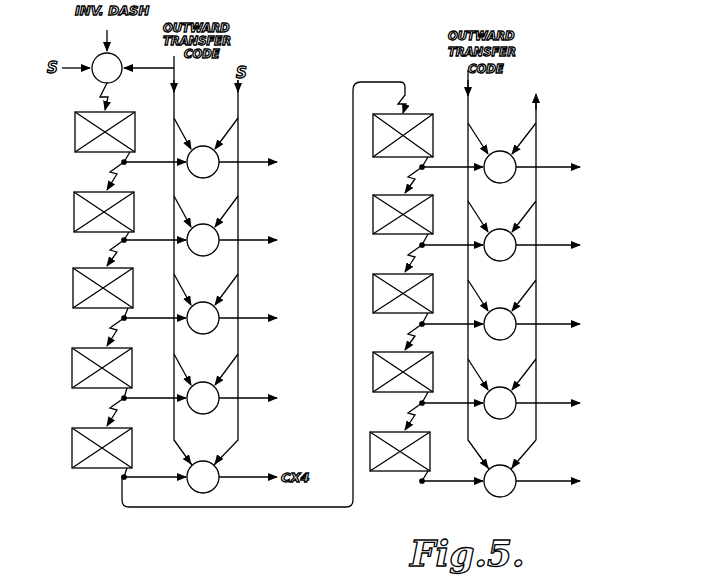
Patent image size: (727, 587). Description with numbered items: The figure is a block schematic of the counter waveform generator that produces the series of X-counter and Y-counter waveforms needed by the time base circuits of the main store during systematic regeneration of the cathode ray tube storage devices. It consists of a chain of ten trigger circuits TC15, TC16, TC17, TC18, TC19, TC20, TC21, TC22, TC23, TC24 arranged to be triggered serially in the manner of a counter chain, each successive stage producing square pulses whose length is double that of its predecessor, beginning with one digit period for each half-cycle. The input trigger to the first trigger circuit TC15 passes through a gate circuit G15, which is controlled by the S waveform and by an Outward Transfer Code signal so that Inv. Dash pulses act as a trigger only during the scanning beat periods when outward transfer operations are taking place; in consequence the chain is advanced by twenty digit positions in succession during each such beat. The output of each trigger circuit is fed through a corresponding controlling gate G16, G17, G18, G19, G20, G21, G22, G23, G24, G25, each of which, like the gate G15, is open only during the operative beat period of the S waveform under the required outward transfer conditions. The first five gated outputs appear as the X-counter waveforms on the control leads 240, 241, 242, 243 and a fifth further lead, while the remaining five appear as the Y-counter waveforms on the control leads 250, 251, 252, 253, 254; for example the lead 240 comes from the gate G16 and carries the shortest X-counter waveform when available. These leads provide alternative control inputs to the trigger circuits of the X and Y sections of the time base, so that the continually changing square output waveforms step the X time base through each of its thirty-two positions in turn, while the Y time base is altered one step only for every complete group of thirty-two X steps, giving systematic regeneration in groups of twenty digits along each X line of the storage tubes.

The control lead 240 is at (255, 158).
The control lead 241 is at (255, 236).
The control lead 242 is at (255, 314).
The control lead 243 is at (255, 394).
The control lead 250 is at (556, 163).
The control lead 251 is at (556, 241).
The control lead 252 is at (556, 320).
The control lead 253 is at (556, 399).
The control lead 254 is at (556, 477).
The gate circuit G15 is at (120, 79).
The controlling gate G16 is at (202, 144).
The controlling gate G17 is at (202, 222).
The controlling gate G18 is at (202, 300).
The controlling gate G19 is at (202, 380).
The controlling gate G20 is at (202, 459).
The controlling gate G21 is at (499, 149).
The controlling gate G22 is at (499, 227).
The controlling gate G23 is at (499, 306).
The controlling gate G24 is at (499, 385).
The controlling gate G25 is at (499, 463).
The trigger circuit TC15 is at (87, 111).
The trigger circuit TC16 is at (87, 191).
The trigger circuit TC17 is at (87, 267).
The trigger circuit TC18 is at (87, 347).
The trigger circuit TC19 is at (87, 427).
The trigger circuit TC20 is at (440, 106).
The trigger circuit TC21 is at (450, 188).
The trigger circuit TC22 is at (450, 267).
The trigger circuit TC23 is at (450, 345).
The trigger circuit TC24 is at (450, 425).